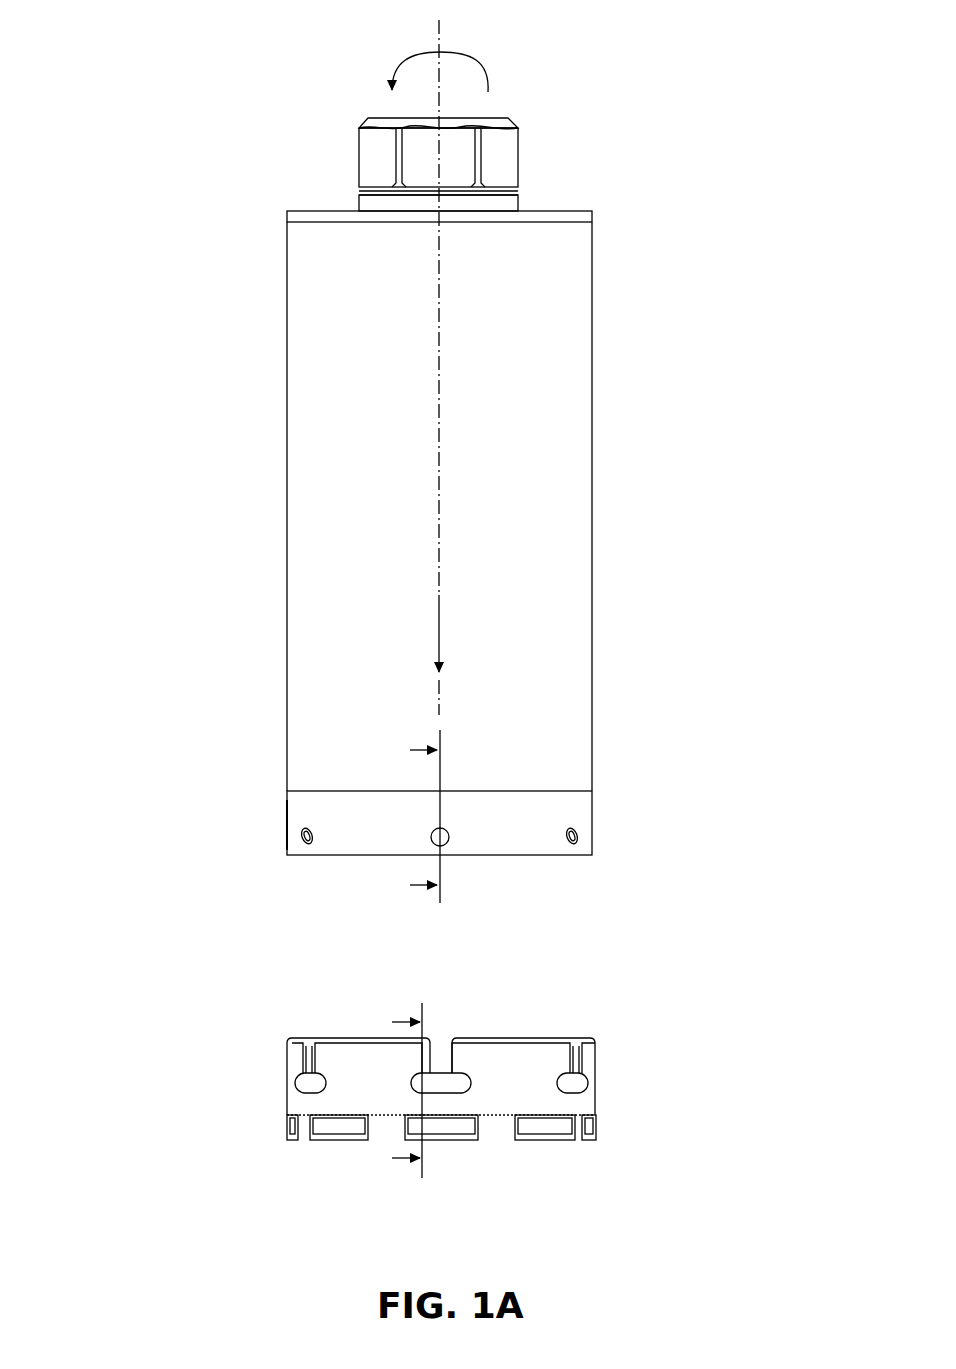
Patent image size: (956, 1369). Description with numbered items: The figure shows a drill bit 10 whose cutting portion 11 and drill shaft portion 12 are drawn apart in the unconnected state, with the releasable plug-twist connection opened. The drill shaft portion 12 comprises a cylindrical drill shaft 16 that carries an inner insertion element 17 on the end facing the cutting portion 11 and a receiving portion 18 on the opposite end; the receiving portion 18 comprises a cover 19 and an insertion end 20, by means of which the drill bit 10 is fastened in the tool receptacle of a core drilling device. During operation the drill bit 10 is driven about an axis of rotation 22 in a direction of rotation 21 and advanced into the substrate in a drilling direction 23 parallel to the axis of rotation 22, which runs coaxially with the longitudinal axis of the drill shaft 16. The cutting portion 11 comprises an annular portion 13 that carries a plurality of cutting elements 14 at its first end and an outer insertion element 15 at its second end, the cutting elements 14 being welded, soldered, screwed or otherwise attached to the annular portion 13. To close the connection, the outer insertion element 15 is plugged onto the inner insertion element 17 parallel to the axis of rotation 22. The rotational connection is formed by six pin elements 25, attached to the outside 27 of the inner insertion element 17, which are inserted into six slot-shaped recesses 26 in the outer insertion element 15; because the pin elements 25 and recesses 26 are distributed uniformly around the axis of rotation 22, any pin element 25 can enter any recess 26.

The drill bit 10 is at (226, 133).
The cutting portion 11 is at (163, 1050).
The drill shaft portion 12 is at (163, 423).
The annular portion 13 is at (588, 1108).
The cutting elements 14 is at (292, 1142).
The outer insertion element 15 is at (588, 1055).
The drill shaft 16 is at (582, 474).
The inner insertion element 17 is at (582, 807).
The receiving portion 18 is at (712, 153).
The cover 19 is at (313, 214).
The insertion end 20 is at (510, 160).
The direction of rotation 21 is at (440, 77).
The axis of rotation 22 is at (442, 335).
The drilling direction 23 is at (441, 622).
The pin elements 25 is at (305, 848).
The slot-shaped recesses 26 is at (309, 1040).
The outside 27 is at (286, 823).